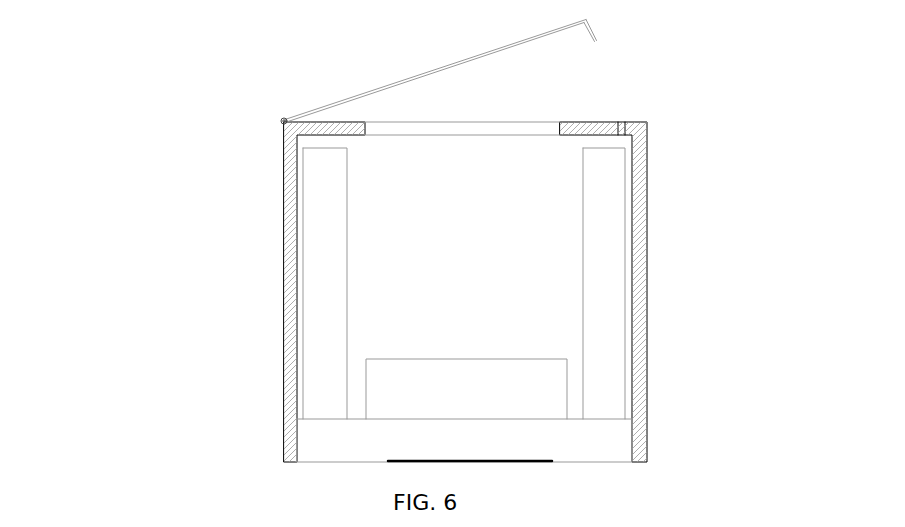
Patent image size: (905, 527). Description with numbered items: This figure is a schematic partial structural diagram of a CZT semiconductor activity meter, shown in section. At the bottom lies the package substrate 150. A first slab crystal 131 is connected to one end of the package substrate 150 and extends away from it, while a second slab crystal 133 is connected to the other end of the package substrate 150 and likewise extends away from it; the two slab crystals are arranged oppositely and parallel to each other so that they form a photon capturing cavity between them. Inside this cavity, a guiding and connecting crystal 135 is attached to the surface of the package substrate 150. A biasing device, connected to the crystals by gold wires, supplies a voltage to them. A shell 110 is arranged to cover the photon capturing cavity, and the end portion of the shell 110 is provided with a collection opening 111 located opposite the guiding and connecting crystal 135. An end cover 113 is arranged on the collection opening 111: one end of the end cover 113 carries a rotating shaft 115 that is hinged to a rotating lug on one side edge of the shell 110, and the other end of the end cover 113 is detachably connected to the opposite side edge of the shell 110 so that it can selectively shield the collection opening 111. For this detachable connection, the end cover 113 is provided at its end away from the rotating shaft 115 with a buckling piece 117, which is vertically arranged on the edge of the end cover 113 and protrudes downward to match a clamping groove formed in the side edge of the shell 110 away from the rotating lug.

The shell 110 is at (297, 375).
The collection opening 111 is at (510, 122).
The end cover 113 is at (402, 81).
The rotating shaft 115 is at (282, 119).
The buckling piece 117 is at (597, 40).
The first slab crystal 131 is at (347, 240).
The second slab crystal 133 is at (605, 282).
The guiding and connecting crystal 135 is at (547, 378).
The package substrate 150 is at (615, 439).